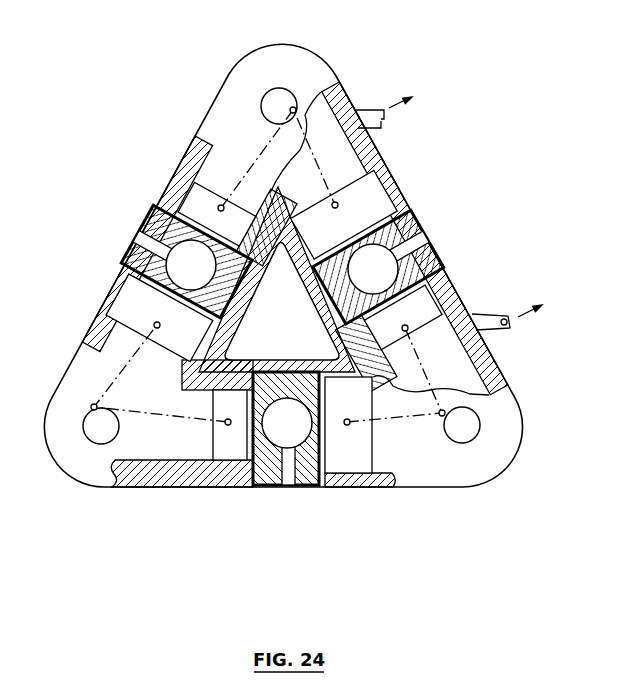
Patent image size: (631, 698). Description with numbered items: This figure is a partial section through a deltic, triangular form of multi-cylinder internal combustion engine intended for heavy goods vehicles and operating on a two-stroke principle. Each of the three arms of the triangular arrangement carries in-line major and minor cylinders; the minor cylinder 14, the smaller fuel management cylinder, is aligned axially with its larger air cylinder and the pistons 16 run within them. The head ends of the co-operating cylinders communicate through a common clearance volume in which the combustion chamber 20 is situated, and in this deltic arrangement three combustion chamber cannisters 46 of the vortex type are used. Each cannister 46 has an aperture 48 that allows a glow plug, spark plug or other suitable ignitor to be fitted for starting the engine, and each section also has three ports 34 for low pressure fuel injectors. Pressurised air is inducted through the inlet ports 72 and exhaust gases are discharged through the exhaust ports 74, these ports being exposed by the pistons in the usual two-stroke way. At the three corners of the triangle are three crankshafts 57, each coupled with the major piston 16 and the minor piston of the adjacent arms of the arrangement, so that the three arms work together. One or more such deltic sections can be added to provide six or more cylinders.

The minor cylinder 14 is at (207, 197).
The piston 16 is at (365, 193).
The combustion chamber 20 is at (384, 272).
The port for low pressure fuel injector 34 is at (514, 318).
The combustion chamber cannister 46 is at (405, 226).
The aperture 48 is at (287, 465).
The crankshaft 57 is at (287, 90).
The inlet port 72 is at (482, 348).
The exhaust port 74 is at (357, 128).